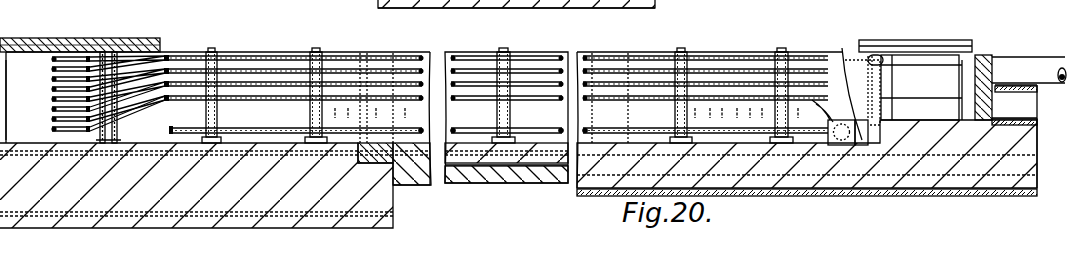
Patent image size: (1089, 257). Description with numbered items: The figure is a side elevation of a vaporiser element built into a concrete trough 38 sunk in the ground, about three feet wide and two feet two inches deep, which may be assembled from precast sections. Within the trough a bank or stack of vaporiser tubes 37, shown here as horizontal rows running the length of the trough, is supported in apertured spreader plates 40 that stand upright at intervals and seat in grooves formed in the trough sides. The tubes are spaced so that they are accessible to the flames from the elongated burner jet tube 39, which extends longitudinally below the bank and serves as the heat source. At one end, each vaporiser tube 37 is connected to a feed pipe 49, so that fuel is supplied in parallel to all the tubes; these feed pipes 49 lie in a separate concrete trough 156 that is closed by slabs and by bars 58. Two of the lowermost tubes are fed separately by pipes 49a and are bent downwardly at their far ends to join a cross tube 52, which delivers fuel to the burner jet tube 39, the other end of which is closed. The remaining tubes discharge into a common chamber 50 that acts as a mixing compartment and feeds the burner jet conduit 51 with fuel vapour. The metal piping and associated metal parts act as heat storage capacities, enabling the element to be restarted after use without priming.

The bars 58 is at (84, 30).
The feed pipe 49 is at (52, 81).
The pipes 49a is at (87, 116).
The concrete trough 156 is at (0, 103).
The vaporiser tubes 37 is at (238, 85).
The spreader plates 40 is at (780, 70).
The burner jet tube 39 is at (413, 130).
The concrete trough 38 is at (497, 183).
The common chamber 50 is at (937, 60).
The burner jet conduit 51 is at (1029, 53).
The cross tube 52 is at (842, 192).